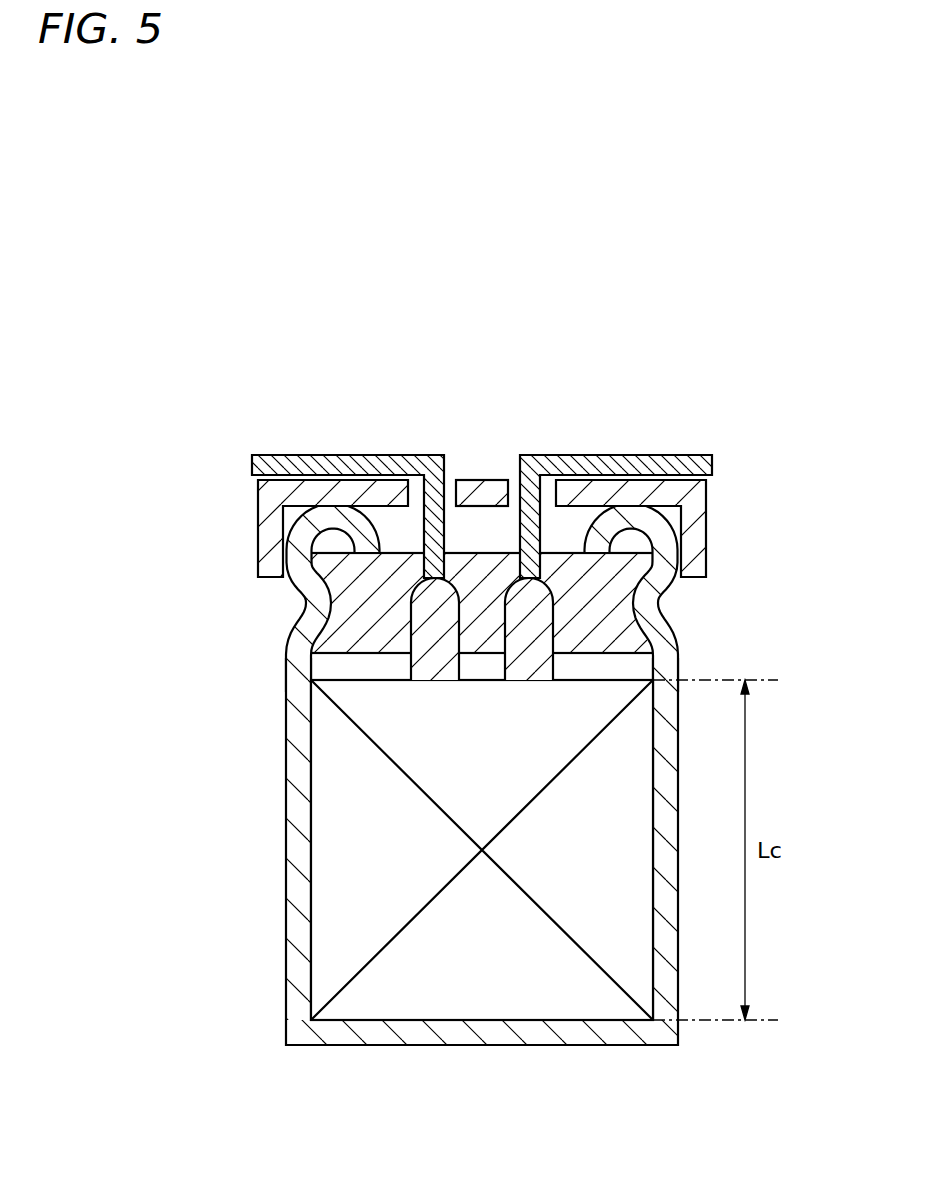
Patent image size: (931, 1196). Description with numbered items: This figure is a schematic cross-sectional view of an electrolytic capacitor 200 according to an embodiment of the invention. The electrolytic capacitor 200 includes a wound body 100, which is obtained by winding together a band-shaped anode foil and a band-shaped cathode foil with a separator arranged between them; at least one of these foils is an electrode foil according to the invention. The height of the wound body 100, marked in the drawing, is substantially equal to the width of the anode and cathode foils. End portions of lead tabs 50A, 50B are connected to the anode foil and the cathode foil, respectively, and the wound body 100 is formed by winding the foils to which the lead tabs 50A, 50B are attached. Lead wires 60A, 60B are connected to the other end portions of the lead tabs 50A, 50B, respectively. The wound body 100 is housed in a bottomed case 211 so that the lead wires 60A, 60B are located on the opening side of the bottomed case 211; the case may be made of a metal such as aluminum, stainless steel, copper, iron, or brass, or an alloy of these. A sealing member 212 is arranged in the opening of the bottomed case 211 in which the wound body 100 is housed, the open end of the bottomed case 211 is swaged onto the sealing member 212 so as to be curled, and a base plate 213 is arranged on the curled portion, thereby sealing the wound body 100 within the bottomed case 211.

The electrolytic capacitor 200 is at (568, 334).
The wound body 100 is at (355, 802).
The bottomed case 211 is at (298, 953).
The sealing member 212 is at (590, 607).
The base plate 213 is at (481, 470).
The lead tab 50A is at (427, 598).
The lead tab 50B is at (532, 650).
The lead wire 60A is at (358, 462).
The lead wire 60B is at (622, 462).